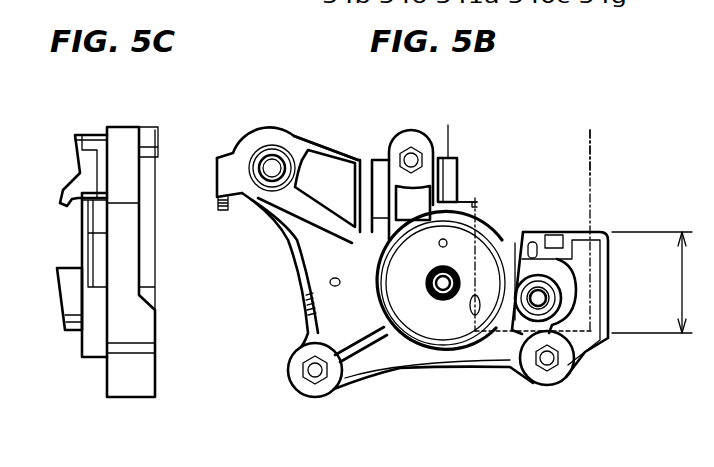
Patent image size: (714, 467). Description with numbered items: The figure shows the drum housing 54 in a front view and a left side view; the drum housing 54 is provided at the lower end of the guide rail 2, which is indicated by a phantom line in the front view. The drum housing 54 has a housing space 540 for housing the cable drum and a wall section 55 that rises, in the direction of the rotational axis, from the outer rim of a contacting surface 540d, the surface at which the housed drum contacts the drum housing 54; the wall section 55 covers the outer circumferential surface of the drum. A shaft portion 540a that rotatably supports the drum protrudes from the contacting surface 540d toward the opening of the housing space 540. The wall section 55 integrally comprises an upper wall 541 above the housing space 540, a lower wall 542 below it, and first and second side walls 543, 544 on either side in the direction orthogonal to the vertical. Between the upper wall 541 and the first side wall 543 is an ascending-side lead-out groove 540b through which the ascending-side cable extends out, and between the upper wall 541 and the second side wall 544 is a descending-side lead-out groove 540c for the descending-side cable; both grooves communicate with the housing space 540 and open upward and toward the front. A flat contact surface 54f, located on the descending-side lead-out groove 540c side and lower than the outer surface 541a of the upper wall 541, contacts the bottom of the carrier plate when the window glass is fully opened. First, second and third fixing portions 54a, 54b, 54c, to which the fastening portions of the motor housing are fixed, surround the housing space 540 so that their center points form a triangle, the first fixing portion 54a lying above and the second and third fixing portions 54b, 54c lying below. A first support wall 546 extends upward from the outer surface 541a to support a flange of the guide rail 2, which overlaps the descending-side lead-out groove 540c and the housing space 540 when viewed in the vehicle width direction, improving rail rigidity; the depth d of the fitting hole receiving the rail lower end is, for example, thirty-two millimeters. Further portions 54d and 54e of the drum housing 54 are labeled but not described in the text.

In FIG. 5B, the guide rail 2 is at (595, 165).
In FIG. 5C, the drum housing 54 is at (81, 116).
In FIG. 5B, the first fixing portion 54a is at (400, 133).
In FIG. 5B, the second fixing portion 54b is at (553, 370).
In FIG. 5B, the third fixing portion 54c is at (307, 377).
In FIG. 5B, the upper left mounting boss 54d is at (268, 157).
In FIG. 5C, the protruding portion 54e is at (66, 300).
In FIG. 5B, the protruding portion 54e is at (552, 295).
In FIG. 5B, the contact surface 54f is at (597, 230).
In FIG. 5B, the wall section 55 is at (360, 292).
In FIG. 5B, the housing space 540 is at (438, 327).
In FIG. 5B, the shaft portion 540a is at (437, 295).
In FIG. 5B, the ascending-side lead-out groove 540b is at (377, 170).
In FIG. 5B, the descending-side lead-out groove 540c is at (508, 237).
In FIG. 5B, the contacting surface 540d is at (413, 302).
In FIG. 5B, the upper wall 541 is at (490, 227).
In FIG. 5B, the outer surface of upper wall 541a is at (465, 210).
In FIG. 5B, the lower wall 542 is at (482, 340).
In FIG. 5B, the first side wall 543 is at (352, 232).
In FIG. 5B, the second side wall 544 is at (562, 265).
In FIG. 5B, the first support wall 546 is at (443, 160).
In FIG. 5B, the depth of fitting hole d is at (654, 282).